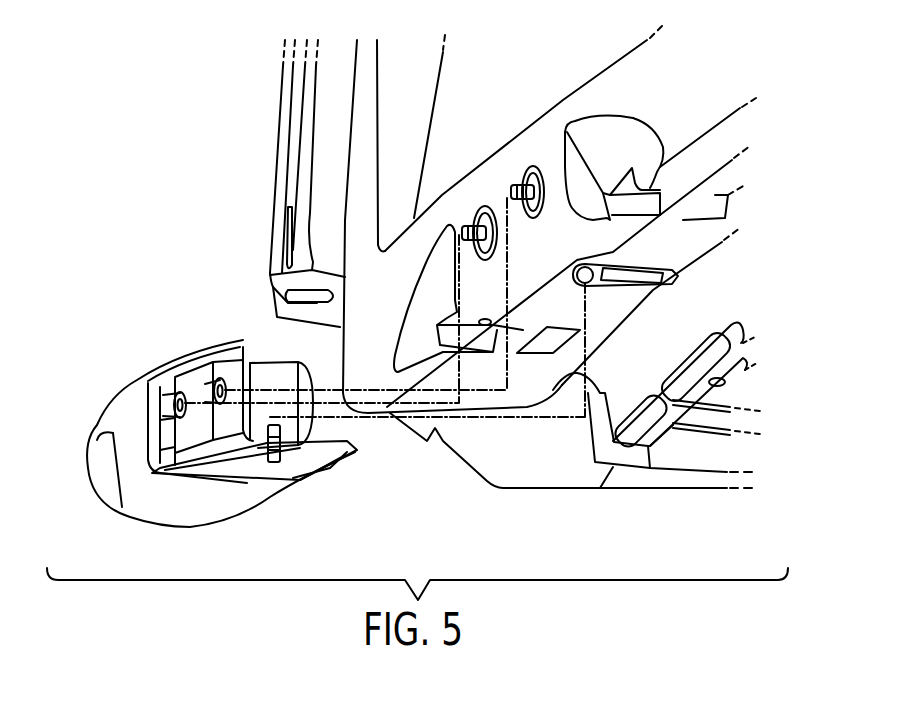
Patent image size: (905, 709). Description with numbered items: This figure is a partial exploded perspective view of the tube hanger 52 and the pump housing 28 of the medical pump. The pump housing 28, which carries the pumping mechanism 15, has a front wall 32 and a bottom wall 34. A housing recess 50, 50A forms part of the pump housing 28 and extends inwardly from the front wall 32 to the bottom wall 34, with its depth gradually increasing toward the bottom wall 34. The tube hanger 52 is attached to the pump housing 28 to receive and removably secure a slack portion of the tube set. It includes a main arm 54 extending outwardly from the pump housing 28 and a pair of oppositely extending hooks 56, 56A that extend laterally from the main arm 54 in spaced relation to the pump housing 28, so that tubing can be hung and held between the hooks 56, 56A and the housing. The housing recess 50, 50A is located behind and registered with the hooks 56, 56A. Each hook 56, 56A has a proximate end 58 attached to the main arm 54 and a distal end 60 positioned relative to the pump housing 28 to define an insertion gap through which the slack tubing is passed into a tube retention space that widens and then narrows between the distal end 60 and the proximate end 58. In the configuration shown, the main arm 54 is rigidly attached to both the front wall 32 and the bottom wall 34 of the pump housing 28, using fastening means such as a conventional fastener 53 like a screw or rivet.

The pumping mechanism 15 is at (278, 111).
The pump housing 28 is at (347, 155).
The front wall 32 is at (358, 326).
The bottom wall 34 is at (522, 385).
The housing recess 50 is at (432, 238).
The housing recess 50A is at (593, 128).
The tube hanger 52 is at (123, 512).
The fastener 53 is at (530, 168).
The main arm 54 is at (330, 470).
The hook 56 is at (263, 367).
The hook 56A is at (140, 387).
The proximate end 58 is at (148, 376).
The distal end 60 is at (90, 478).